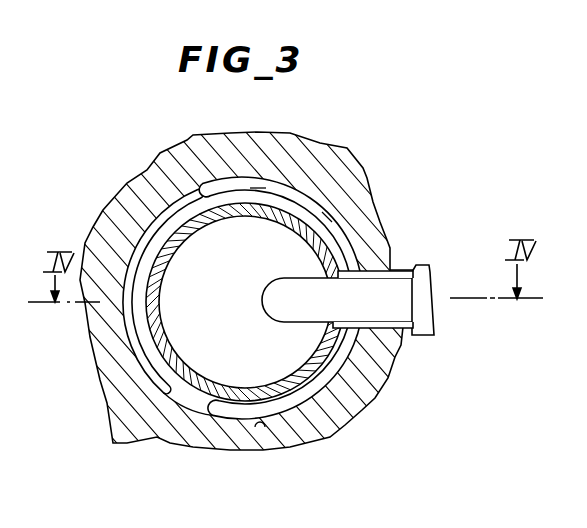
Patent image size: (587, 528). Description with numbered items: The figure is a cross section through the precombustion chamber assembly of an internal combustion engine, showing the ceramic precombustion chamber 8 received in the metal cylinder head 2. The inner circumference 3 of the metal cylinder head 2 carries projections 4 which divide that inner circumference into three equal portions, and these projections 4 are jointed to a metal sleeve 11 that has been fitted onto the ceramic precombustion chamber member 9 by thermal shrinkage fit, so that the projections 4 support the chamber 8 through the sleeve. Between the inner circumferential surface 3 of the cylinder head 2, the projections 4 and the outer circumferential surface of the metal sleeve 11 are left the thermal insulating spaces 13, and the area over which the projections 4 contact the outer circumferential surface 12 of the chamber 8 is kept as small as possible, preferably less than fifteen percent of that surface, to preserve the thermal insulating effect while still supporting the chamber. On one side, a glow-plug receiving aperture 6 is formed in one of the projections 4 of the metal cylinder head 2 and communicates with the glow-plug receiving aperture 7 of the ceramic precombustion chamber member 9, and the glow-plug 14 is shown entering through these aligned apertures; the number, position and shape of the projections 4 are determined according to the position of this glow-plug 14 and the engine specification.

The metal cylinder head 2 is at (127, 393).
The inner circumference 3 is at (260, 430).
The projections 4 is at (170, 200).
The glow-plug receiving aperture 6 is at (391, 268).
The glow-plug receiving aperture 7 is at (328, 330).
The ceramic precombustion chamber 8 is at (203, 255).
The ceramic precombustion chamber member 9 is at (233, 395).
The metal sleeve 11 is at (137, 313).
The outer circumferential surface 12 is at (258, 187).
The thermal insulating spaces 13 is at (327, 217).
The glow-plug 14 is at (430, 270).